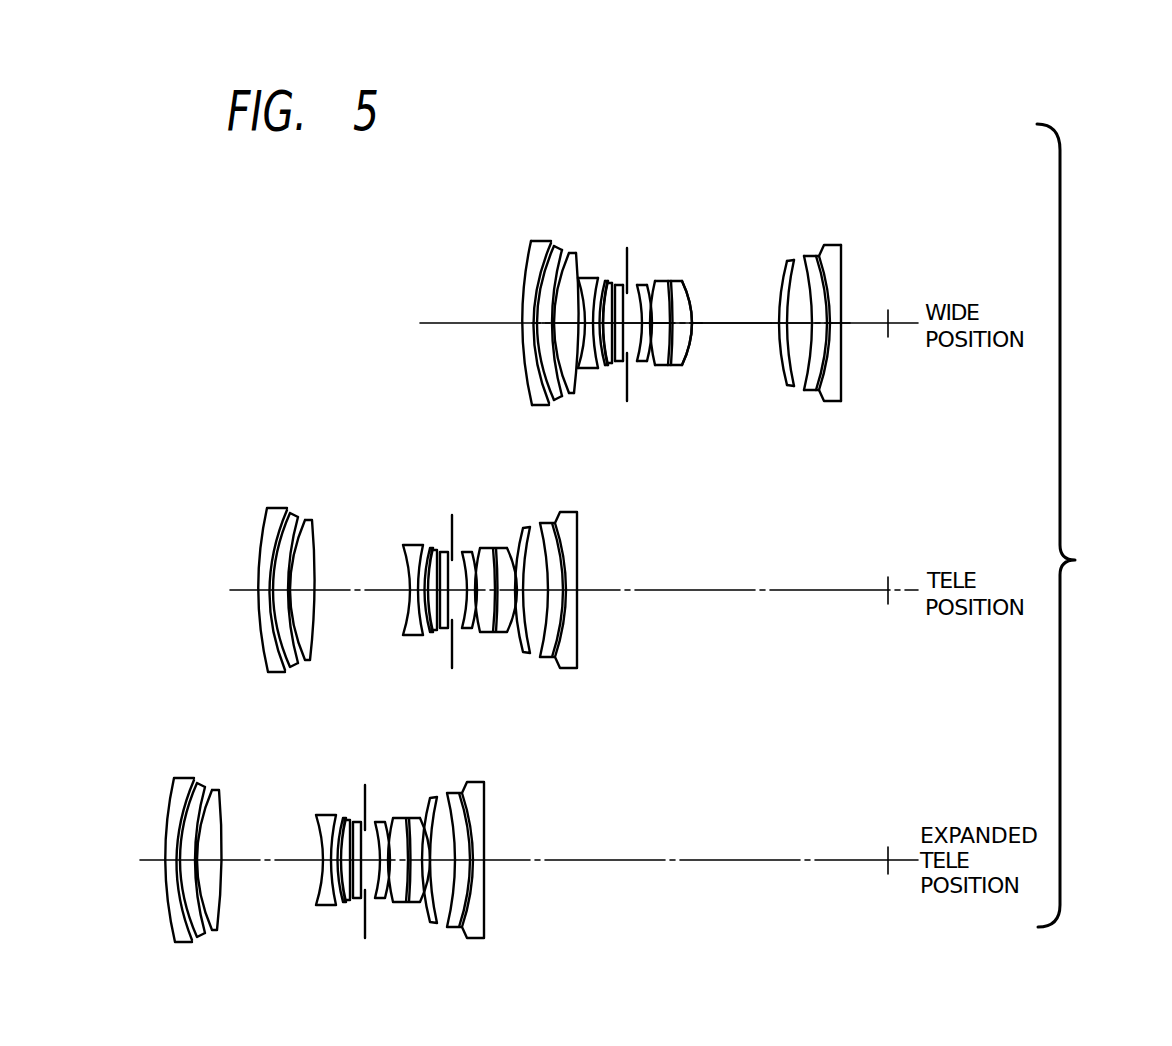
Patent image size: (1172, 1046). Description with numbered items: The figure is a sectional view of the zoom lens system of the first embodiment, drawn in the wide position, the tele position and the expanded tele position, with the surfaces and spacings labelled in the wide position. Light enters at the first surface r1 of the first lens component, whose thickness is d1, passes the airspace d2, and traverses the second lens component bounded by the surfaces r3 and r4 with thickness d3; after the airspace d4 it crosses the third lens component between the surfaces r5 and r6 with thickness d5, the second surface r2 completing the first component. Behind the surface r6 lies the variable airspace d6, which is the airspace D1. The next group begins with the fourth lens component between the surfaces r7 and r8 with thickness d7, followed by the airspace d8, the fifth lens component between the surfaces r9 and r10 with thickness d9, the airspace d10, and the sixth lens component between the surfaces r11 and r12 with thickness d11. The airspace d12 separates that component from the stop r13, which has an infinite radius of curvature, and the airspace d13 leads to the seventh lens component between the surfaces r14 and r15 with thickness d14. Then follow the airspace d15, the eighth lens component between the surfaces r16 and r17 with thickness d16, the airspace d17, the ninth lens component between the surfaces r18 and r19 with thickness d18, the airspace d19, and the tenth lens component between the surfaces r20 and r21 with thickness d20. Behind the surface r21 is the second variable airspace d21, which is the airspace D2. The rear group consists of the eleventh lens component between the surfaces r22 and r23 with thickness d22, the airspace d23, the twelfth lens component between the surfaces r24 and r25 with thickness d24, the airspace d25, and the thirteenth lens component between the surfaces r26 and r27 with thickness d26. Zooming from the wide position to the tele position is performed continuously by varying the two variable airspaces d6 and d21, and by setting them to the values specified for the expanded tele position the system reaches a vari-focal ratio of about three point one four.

The radius of curvature of first lens surface r1 is at (528, 262).
The radius of curvature of second lens surface r2 is at (551, 245).
The radius of curvature of third lens surface r3 is at (554, 248).
The radius of curvature of fourth lens surface r4 is at (562, 252).
The radius of curvature of fifth lens surface r5 is at (569, 255).
The radius of curvature of sixth lens surface r6 is at (576, 255).
The radius of curvature of seventh lens surface r7 is at (578, 279).
The radius of curvature of eighth lens surface r8 is at (598, 279).
The radius of curvature of ninth lens surface r9 is at (605, 282).
The radius of curvature of tenth lens surface r10 is at (608, 282).
The radius of curvature of eleventh lens surface r11 is at (607, 284).
The radius of curvature of twelfth lens surface r12 is at (612, 284).
The stop surface r13 is at (615, 286).
The radius of curvature of fourteenth lens surface r14 is at (623, 286).
The radius of curvature of fifteenth lens surface r15 is at (637, 286).
The radius of curvature of sixteenth lens surface r16 is at (647, 286).
The radius of curvature of seventeenth lens surface r17 is at (655, 282).
The radius of curvature of eighteenth lens surface r18 is at (668, 282).
The radius of curvature of nineteenth lens surface r19 is at (671, 282).
The radius of curvature of twentieth lens surface r20 is at (682, 282).
The radius of curvature of twenty-first lens surface r21 is at (688, 305).
The radius of curvature of twenty-second lens surface r22 is at (787, 262).
The radius of curvature of twenty-third lens surface r23 is at (794, 261).
The radius of curvature of twenty-fourth lens surface r24 is at (804, 257).
The radius of curvature of twenty-fifth lens surface r25 is at (816, 257).
The radius of curvature of twenty-sixth lens surface r26 is at (819, 257).
The radius of curvature of twenty-seventh lens surface r27 is at (841, 275).
The thickness of first lens component d1 is at (535, 348).
The airspace between first and second lens components d2 is at (540, 316).
The thickness of second lens component d3 is at (550, 356).
The airspace between second and third lens components d4 is at (556, 372).
The thickness of third lens component d5 is at (562, 372).
The variable airspace D1 d6 is at (575, 385).
The thickness of fourth lens component d7 is at (588, 372).
The airspace between fourth and fifth lens components d8 is at (602, 368).
The thickness of fifth lens component d9 is at (607, 372).
The airspace between fifth and sixth lens components d10 is at (613, 368).
The thickness of sixth lens component d11 is at (619, 366).
The airspace between sixth lens component and stop d12 is at (626, 368).
The airspace between stop and seventh lens component d13 is at (641, 366).
The thickness of seventh lens component d14 is at (650, 368).
The airspace between seventh and eighth lens components d15 is at (688, 318).
The thickness of eighth lens component d16 is at (660, 368).
The airspace between eighth and ninth lens components d17 is at (670, 372).
The thickness of ninth lens component d18 is at (678, 368).
The airspace between ninth and tenth lens components d19 is at (686, 352).
The thickness of tenth lens component d20 is at (690, 338).
The variable airspace D2 d21 is at (790, 335).
The thickness of eleventh lens component d22 is at (800, 342).
The airspace between eleventh and twelfth lens components d23 is at (810, 312).
The thickness of twelfth lens component d24 is at (812, 375).
The airspace between twelfth and thirteenth lens components d25 is at (826, 378).
The thickness of thirteenth lens component d26 is at (840, 352).